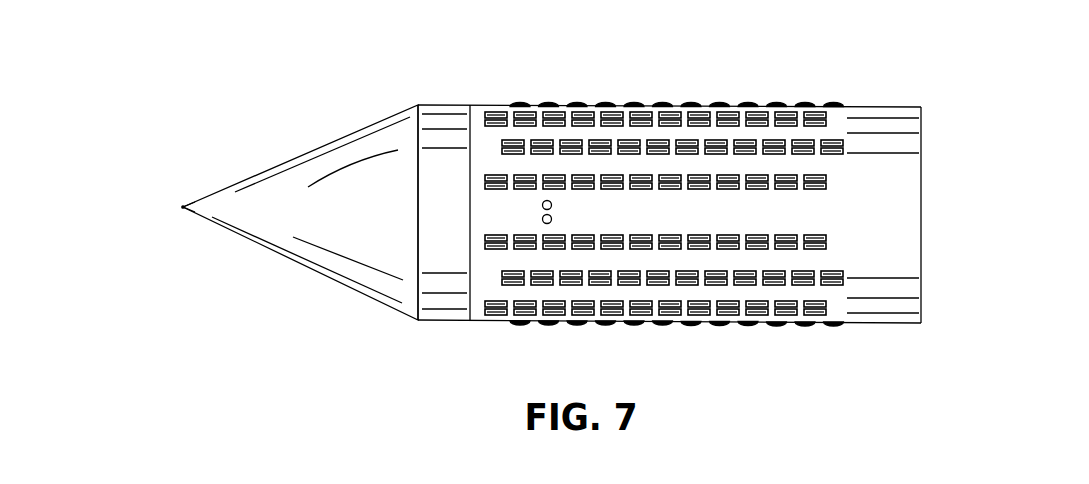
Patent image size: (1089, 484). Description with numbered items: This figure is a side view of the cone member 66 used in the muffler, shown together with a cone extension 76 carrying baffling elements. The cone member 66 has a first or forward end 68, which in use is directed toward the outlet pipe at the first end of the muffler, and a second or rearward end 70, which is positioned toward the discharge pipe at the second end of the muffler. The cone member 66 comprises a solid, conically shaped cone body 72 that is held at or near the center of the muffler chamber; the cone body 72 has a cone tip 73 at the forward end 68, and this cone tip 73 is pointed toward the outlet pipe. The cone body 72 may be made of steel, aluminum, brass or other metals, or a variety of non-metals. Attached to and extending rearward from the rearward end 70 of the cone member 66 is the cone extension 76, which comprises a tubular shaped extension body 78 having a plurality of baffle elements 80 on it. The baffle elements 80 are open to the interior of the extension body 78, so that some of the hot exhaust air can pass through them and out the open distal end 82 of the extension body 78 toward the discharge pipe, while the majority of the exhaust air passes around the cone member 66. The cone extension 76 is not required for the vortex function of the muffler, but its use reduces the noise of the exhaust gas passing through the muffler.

The cone member 66 is at (552, 186).
The first or forward end 68 is at (188, 236).
The second or rearward end 70 is at (450, 84).
The cone body 72 is at (360, 227).
The cone tip 73 is at (184, 202).
The cone extension 76 is at (620, 205).
The extension body 78 is at (877, 172).
The baffle elements 80 is at (831, 287).
The open distal end 82 is at (950, 215).